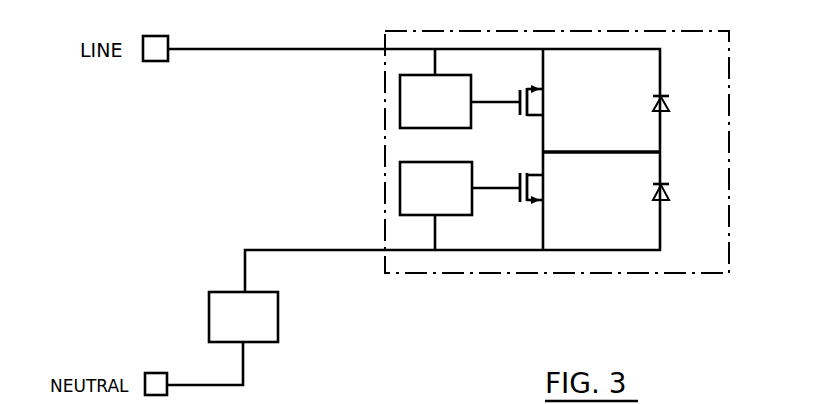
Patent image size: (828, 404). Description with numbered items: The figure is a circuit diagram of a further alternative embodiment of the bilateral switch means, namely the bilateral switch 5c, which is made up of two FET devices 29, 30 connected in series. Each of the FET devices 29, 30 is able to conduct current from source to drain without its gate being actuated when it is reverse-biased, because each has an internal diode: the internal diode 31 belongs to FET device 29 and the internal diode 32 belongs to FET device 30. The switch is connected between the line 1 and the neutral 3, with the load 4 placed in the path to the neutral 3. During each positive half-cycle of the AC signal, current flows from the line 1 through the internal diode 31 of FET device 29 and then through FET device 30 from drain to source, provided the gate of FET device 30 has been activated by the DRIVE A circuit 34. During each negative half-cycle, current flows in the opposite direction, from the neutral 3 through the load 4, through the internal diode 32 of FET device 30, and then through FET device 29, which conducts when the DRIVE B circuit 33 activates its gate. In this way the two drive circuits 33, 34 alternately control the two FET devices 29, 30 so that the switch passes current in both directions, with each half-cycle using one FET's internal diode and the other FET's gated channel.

The line 1 is at (160, 37).
The neutral 3 is at (160, 373).
The load 4 is at (272, 326).
The bilateral switch 5c is at (385, 128).
The FET device 29 is at (522, 94).
The FET device 30 is at (518, 192).
The internal diode 31 is at (668, 101).
The internal diode 32 is at (668, 191).
The DRIVE B circuit 33 is at (400, 92).
The DRIVE A circuit 34 is at (400, 195).